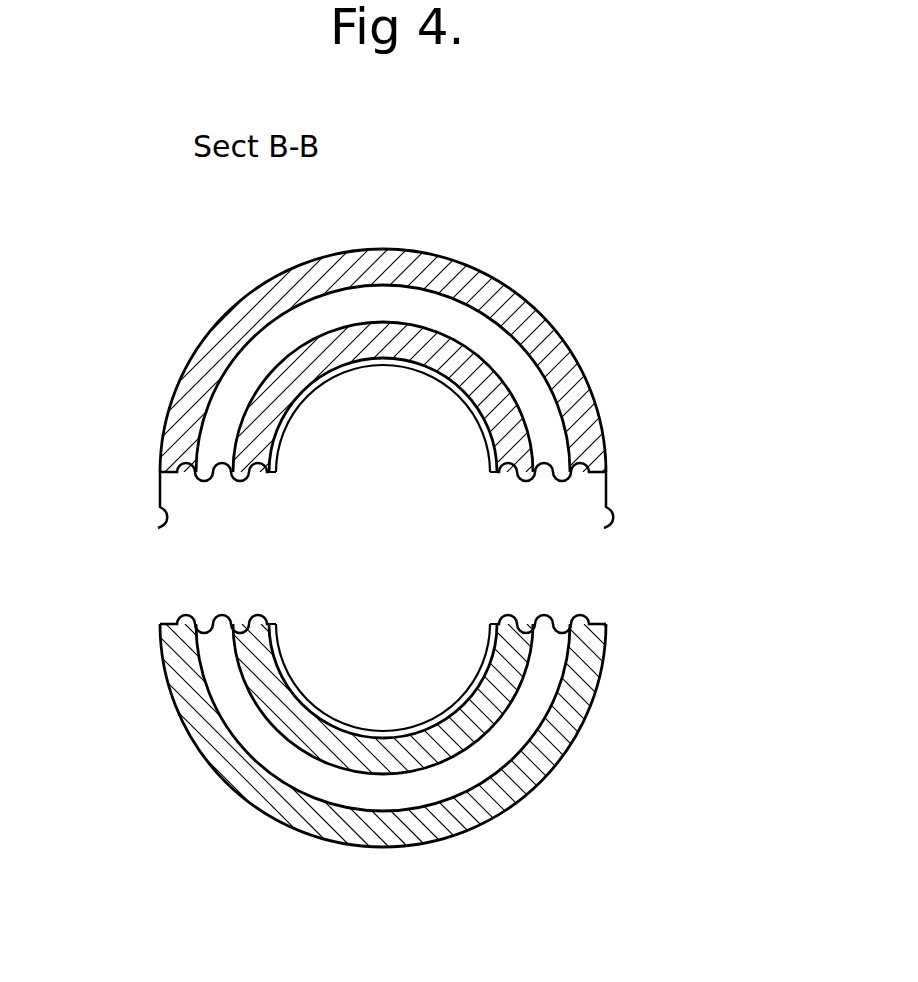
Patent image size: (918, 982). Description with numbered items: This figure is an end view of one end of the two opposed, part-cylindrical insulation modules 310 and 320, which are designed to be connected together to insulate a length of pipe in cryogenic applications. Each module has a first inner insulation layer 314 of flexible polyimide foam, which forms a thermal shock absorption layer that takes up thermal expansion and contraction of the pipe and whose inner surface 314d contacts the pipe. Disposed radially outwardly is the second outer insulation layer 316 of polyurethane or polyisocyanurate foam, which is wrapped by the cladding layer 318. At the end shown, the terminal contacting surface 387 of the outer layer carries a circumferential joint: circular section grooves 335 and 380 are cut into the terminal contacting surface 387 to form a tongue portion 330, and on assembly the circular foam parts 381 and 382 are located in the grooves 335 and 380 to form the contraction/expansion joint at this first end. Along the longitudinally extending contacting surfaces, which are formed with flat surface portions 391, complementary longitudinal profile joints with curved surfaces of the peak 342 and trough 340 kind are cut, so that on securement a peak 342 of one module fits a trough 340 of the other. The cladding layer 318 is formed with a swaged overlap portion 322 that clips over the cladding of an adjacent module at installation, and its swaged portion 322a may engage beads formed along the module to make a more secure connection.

The insulation module 310 is at (487, 830).
The first inner insulation layer 314 is at (278, 443).
The inner surface 314d is at (372, 365).
The second outer insulation layer 316 is at (466, 251).
The cladding layer 318 is at (333, 248).
The insulation module 320 is at (531, 302).
The overlap portion 322 is at (157, 500).
The swaged portion 322a is at (153, 515).
The tongue portion 330 is at (532, 375).
The circular section groove 335 is at (590, 435).
The trough 340 is at (213, 483).
The peak 342 is at (203, 482).
The circular section groove 380 is at (490, 428).
The circular foam part 381 is at (208, 355).
The circular foam part 382 is at (297, 367).
The terminal contacting surface 387 is at (597, 390).
The flat surface portion 391 is at (605, 482).